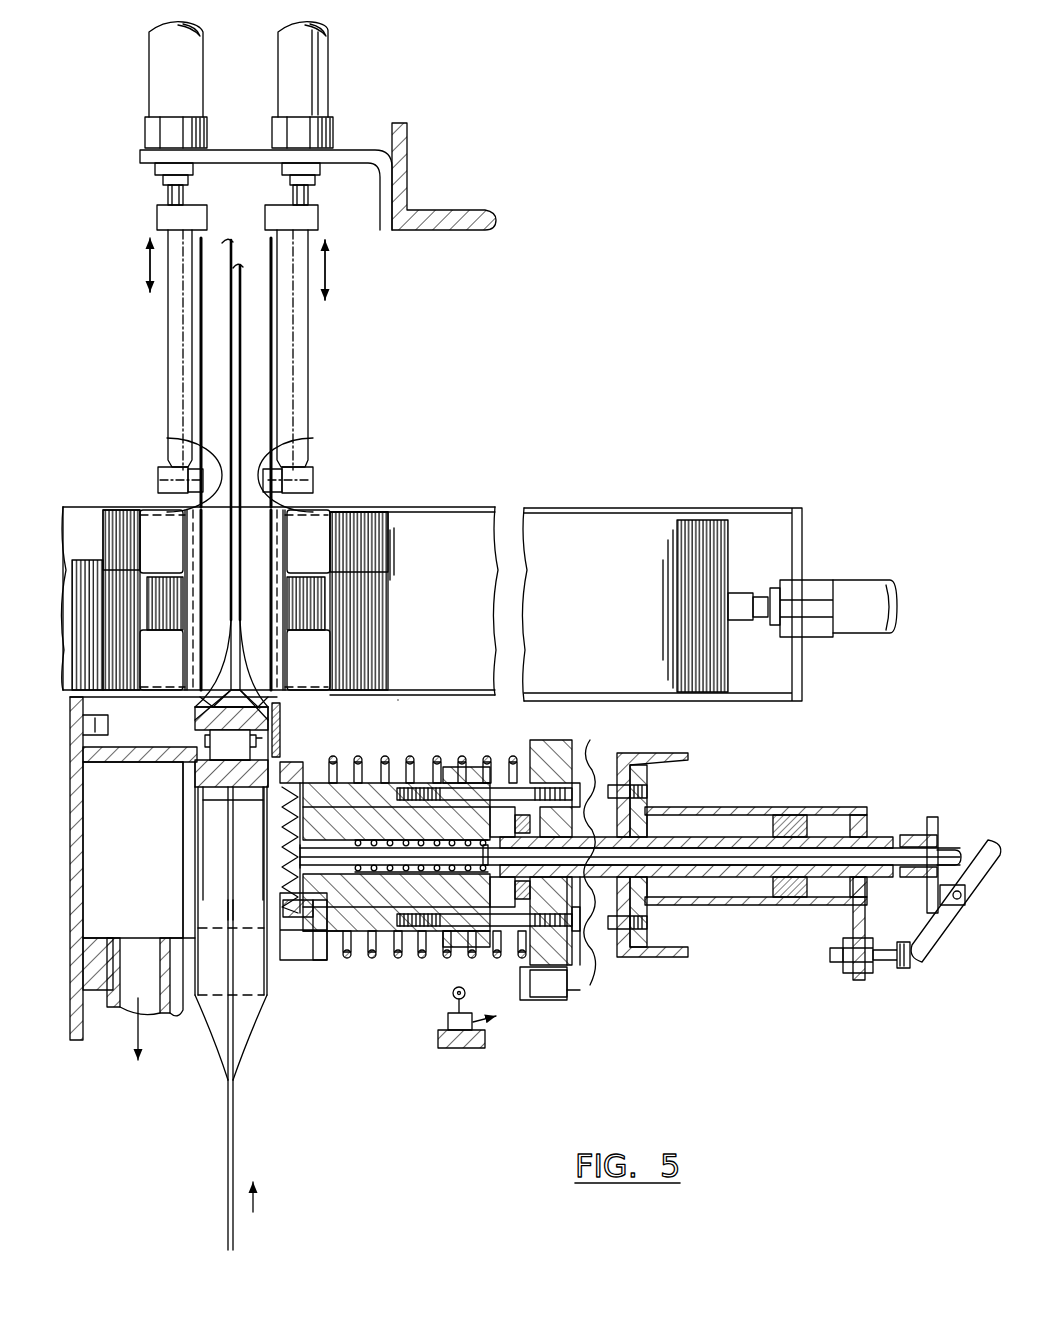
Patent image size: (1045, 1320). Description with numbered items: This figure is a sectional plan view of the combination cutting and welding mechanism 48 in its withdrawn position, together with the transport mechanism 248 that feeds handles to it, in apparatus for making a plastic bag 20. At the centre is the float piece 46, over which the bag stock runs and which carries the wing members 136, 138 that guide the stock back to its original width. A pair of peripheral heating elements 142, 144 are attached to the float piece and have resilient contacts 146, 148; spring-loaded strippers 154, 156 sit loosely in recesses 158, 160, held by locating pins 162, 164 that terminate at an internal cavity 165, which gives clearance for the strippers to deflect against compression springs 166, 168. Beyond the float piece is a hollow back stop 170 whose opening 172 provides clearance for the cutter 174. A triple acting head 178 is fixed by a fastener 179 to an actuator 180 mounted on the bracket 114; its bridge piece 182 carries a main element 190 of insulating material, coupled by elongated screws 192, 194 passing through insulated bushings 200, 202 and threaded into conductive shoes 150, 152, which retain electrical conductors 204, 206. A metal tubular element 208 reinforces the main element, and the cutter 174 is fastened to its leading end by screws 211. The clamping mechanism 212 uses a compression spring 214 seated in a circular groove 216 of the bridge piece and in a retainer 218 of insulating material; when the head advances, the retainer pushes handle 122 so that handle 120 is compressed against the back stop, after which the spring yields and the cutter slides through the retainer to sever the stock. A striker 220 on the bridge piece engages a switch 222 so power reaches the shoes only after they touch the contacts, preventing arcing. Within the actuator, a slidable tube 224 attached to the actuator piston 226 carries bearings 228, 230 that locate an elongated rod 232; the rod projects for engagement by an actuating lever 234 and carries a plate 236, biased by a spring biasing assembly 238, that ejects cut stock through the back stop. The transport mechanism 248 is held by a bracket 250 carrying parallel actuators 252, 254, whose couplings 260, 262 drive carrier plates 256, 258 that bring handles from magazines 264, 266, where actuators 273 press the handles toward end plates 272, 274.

The plastic bag 20 is at (112, 530).
The float piece 46 is at (243, 990).
The combination cutting and welding mechanism 48 is at (580, 1054).
The bracket 114 is at (668, 958).
The handle 120 is at (190, 863).
The handle 122 is at (368, 651).
The wing member 136 is at (236, 1155).
The wing member 138 is at (236, 570).
The peripheral heating element 142 is at (195, 790).
The peripheral heating element 144 is at (282, 773).
The resilient contact 146 is at (195, 817).
The resilient contact 148 is at (280, 876).
The electrically conductive shoe 150 is at (373, 793).
The conductive shoe 152 is at (347, 953).
The spring-loaded stripper 154 is at (193, 735).
The spring-loaded stripper 156 is at (282, 763).
The recess 158 is at (197, 713).
The recess 160 is at (262, 703).
The locating pin 162 is at (198, 700).
The locating pin 164 is at (262, 680).
The internal cavity 165 is at (207, 687).
The compression spring 166 is at (193, 772).
The compression spring 168 is at (195, 837).
The hollow back stop 170 is at (175, 1017).
The opening 172 is at (180, 897).
The cutter 174 is at (300, 897).
The triple acting head 178 is at (367, 1040).
The fastener 179 is at (567, 890).
The actuator 180 is at (743, 790).
The bridge piece 182 is at (591, 748).
The main element 190 is at (421, 954).
The elongated screw 192 is at (520, 813).
The elongated screw 194 is at (510, 954).
The insulated bushing 200 is at (552, 763).
The insulated bushing 202 is at (570, 997).
The electrical conductor 204 is at (598, 768).
The electrical conductor 206 is at (593, 972).
The metal tubular element 208 is at (450, 786).
The screw 211 is at (262, 897).
The clamping mechanism 212 is at (320, 960).
The compression spring 214 is at (388, 963).
The circular groove 216 is at (490, 767).
The retainer 218 is at (342, 763).
The striker 220 is at (533, 1000).
The switch 222 is at (438, 1024).
The slidable tube 224 is at (683, 822).
The actuator piston 226 is at (817, 820).
The bearing 228 is at (503, 828).
The bearing 230 is at (918, 837).
The elongated rod 232 is at (702, 853).
The actuating lever 234 is at (938, 932).
The plate 236 is at (285, 812).
The spring biasing assembly 238 is at (416, 838).
The transport mechanism 248 is at (410, 446).
The bracket 250 is at (351, 150).
The actuator 252 is at (159, 58).
The actuator 254 is at (331, 62).
The carrier plate 256 is at (187, 328).
The carrier plate 258 is at (281, 337).
The coupling 260 is at (168, 218).
The coupling 262 is at (318, 216).
The magazine 264 is at (128, 507).
The magazine 266 is at (360, 507).
The end plate 272 is at (168, 443).
The actuator 273 is at (840, 580).
The end plate 274 is at (305, 443).